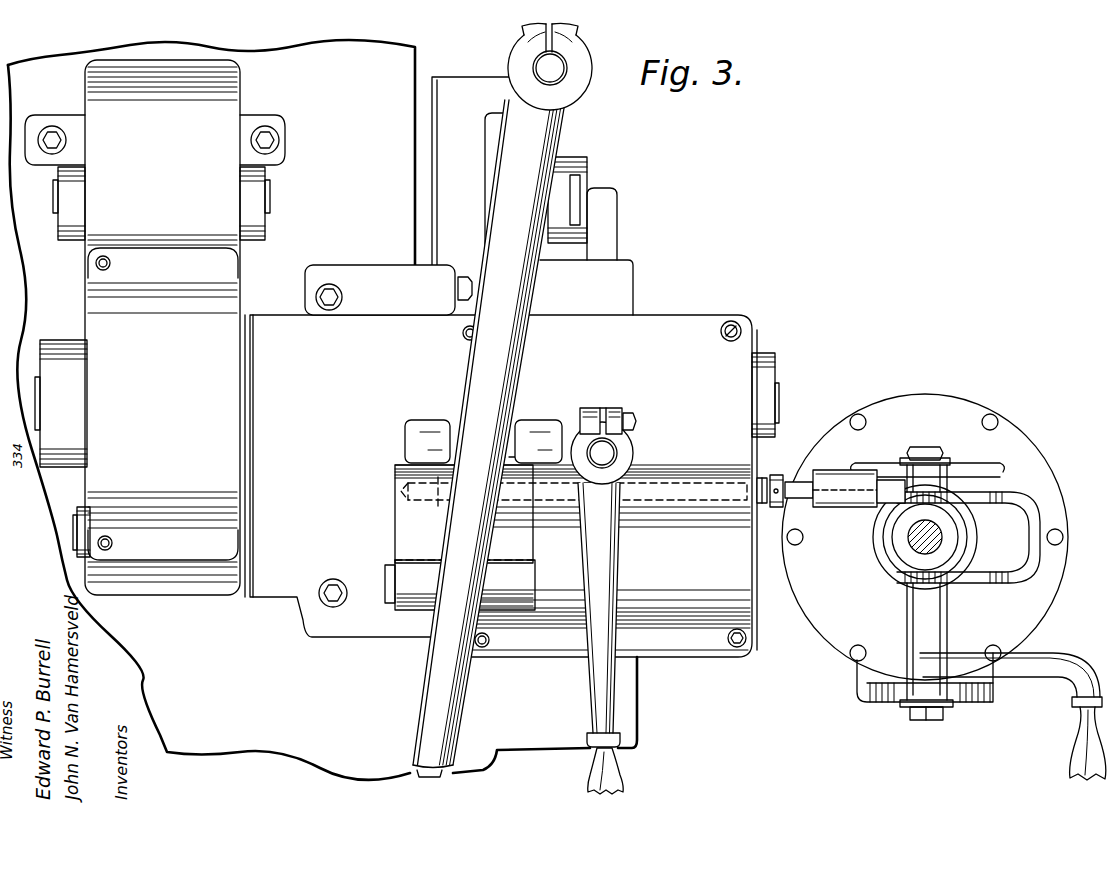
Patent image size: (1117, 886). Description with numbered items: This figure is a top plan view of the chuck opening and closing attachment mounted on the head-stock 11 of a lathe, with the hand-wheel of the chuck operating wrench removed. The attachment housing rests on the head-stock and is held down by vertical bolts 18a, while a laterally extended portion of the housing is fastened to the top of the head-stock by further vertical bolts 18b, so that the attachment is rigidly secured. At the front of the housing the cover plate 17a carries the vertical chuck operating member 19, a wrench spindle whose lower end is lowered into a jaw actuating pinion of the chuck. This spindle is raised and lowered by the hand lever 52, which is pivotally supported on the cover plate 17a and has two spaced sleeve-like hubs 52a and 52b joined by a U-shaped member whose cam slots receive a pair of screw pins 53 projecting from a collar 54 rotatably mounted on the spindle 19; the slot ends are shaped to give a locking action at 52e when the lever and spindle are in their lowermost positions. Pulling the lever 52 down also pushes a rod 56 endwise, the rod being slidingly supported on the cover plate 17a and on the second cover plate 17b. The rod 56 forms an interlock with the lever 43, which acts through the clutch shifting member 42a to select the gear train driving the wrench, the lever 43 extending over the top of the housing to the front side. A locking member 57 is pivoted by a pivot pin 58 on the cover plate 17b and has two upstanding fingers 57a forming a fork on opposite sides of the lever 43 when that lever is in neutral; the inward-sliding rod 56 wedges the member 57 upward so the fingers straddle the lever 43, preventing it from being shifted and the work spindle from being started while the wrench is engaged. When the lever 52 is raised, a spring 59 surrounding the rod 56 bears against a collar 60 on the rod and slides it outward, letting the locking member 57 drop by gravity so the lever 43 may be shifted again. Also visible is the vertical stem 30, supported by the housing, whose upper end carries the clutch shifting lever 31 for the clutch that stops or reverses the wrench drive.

The head-stock 11 is at (243, 735).
The cover plate 17a is at (960, 402).
The second cover plate 17b is at (733, 330).
The vertical bolts 18a is at (346, 295).
The vertical bolts 18b is at (265, 134).
The chuck operating member 19 is at (942, 535).
The vertical stem 30 is at (612, 447).
The clutch shifting lever 31 is at (622, 600).
The clutch shifting member 42a is at (577, 173).
The lever 43 is at (517, 352).
The hand lever 52 is at (1045, 665).
The sleeve-like hub 52a is at (942, 640).
The sleeve-like hub 52b is at (1017, 483).
The locking portion of cam slot 52e is at (1000, 575).
The screw pins 53 is at (878, 572).
The collar 54 is at (897, 536).
The rod 56 is at (803, 485).
The locking member 57 is at (400, 510).
The upstanding fingers 57a is at (421, 426).
The pivot pin 58 is at (392, 583).
The spring 59 is at (763, 505).
The collar 60 is at (777, 478).